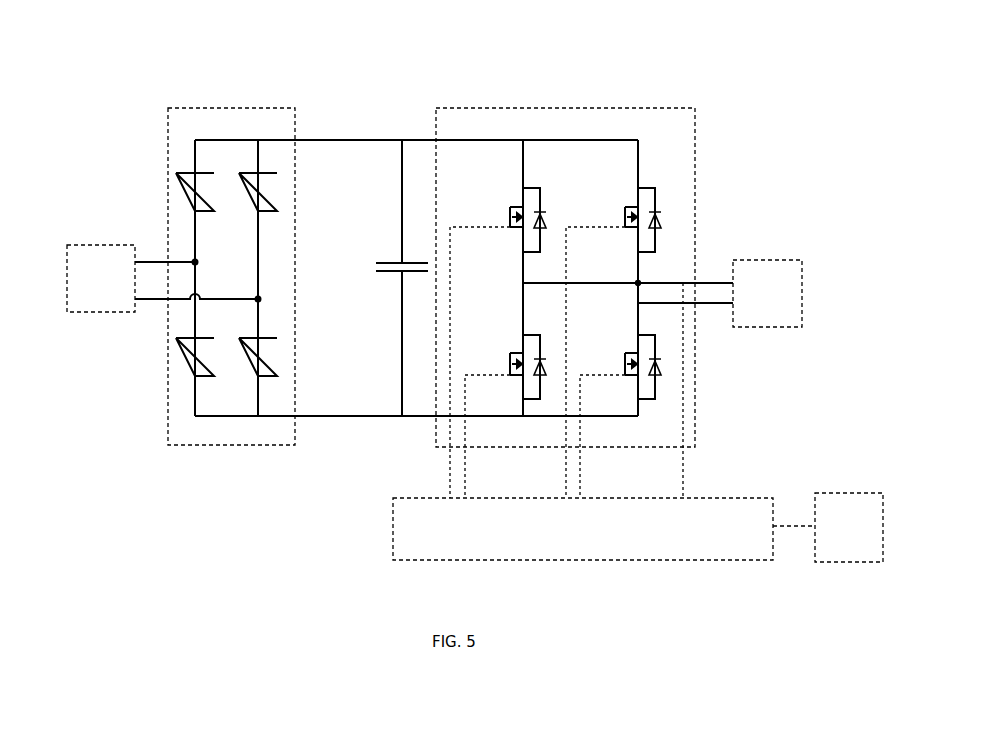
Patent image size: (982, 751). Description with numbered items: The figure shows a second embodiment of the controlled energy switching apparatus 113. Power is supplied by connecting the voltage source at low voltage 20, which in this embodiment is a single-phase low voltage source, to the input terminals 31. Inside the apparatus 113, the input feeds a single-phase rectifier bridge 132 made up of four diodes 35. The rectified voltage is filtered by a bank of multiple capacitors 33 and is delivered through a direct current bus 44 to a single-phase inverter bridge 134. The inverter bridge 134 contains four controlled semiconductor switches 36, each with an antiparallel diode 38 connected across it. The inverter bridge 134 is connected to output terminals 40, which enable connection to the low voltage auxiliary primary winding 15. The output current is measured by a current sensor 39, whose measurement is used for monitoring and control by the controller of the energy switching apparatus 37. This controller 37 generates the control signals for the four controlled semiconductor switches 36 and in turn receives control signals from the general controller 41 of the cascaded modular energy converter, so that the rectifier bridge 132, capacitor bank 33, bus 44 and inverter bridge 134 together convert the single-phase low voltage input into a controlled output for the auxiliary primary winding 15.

The controlled energy switching apparatus 113 is at (258, 45).
The single-phase rectifier bridge 132 is at (185, 108).
The single-phase inverter bridge 134 is at (465, 108).
The voltage source at low voltage 20 is at (95, 240).
The diodes 35 is at (182, 186).
The input terminals 31 is at (155, 305).
The direct current bus 44 is at (397, 135).
The bank of multiple capacitors 33 is at (393, 257).
The controlled semiconductor switches 36 is at (512, 205).
The antiparallel diodes 38 is at (546, 212).
The current sensor 39 is at (685, 290).
The output terminals 40 is at (712, 310).
The low voltage auxiliary primary winding 15 is at (745, 254).
The controller of the energy switching apparatus 37 is at (390, 496).
The general controller 41 is at (826, 492).